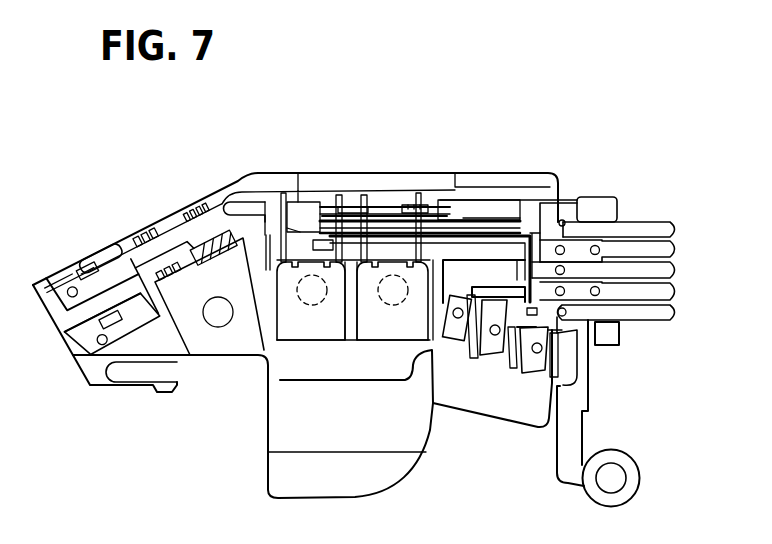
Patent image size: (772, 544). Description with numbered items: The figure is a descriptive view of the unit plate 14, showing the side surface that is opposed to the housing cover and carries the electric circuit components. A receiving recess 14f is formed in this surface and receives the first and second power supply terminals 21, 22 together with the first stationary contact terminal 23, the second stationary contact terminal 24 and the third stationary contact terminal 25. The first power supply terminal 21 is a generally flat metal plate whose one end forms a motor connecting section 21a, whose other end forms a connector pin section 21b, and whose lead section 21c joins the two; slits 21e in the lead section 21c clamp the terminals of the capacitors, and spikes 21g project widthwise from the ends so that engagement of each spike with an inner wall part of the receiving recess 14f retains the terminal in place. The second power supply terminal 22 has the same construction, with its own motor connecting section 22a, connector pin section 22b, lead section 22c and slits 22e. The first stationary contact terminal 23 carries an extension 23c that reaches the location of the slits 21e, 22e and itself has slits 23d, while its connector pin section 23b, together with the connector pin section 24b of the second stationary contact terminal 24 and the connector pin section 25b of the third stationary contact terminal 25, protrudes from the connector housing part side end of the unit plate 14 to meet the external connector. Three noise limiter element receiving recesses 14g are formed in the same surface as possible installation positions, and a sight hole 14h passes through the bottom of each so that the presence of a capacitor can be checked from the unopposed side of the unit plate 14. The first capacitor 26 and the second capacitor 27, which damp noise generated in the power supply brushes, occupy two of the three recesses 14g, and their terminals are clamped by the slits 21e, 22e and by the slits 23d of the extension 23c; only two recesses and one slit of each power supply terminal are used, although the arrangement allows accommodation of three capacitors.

The unit plate 14 is at (565, 134).
The receiving recess 14f is at (484, 188).
The noise limiter element receiving recess 14g is at (352, 338).
The sight hole 14h is at (221, 298).
The first power supply terminal 21 is at (396, 190).
The motor connecting section 21a is at (63, 270).
The connector pin section 21b is at (678, 228).
The lead section 21c is at (378, 195).
The slits 21e is at (433, 205).
The spikes 21g is at (95, 258).
The second power supply terminal 22 is at (312, 204).
The motor connecting section 22a is at (58, 334).
The connector pin section 22b is at (678, 250).
The lead section 22c is at (248, 220).
The slits 22e is at (282, 210).
The first stationary contact terminal 23 is at (580, 294).
The connector pin section 23b is at (678, 294).
The extension 23c is at (452, 242).
The slits 23d is at (347, 207).
The second stationary contact terminal 24 is at (507, 330).
The connector pin section 24b is at (678, 316).
The third stationary contact terminal 25 is at (458, 298).
The connector pin section 25b is at (678, 274).
The first capacitor 26 is at (376, 336).
The second capacitor 27 is at (302, 336).